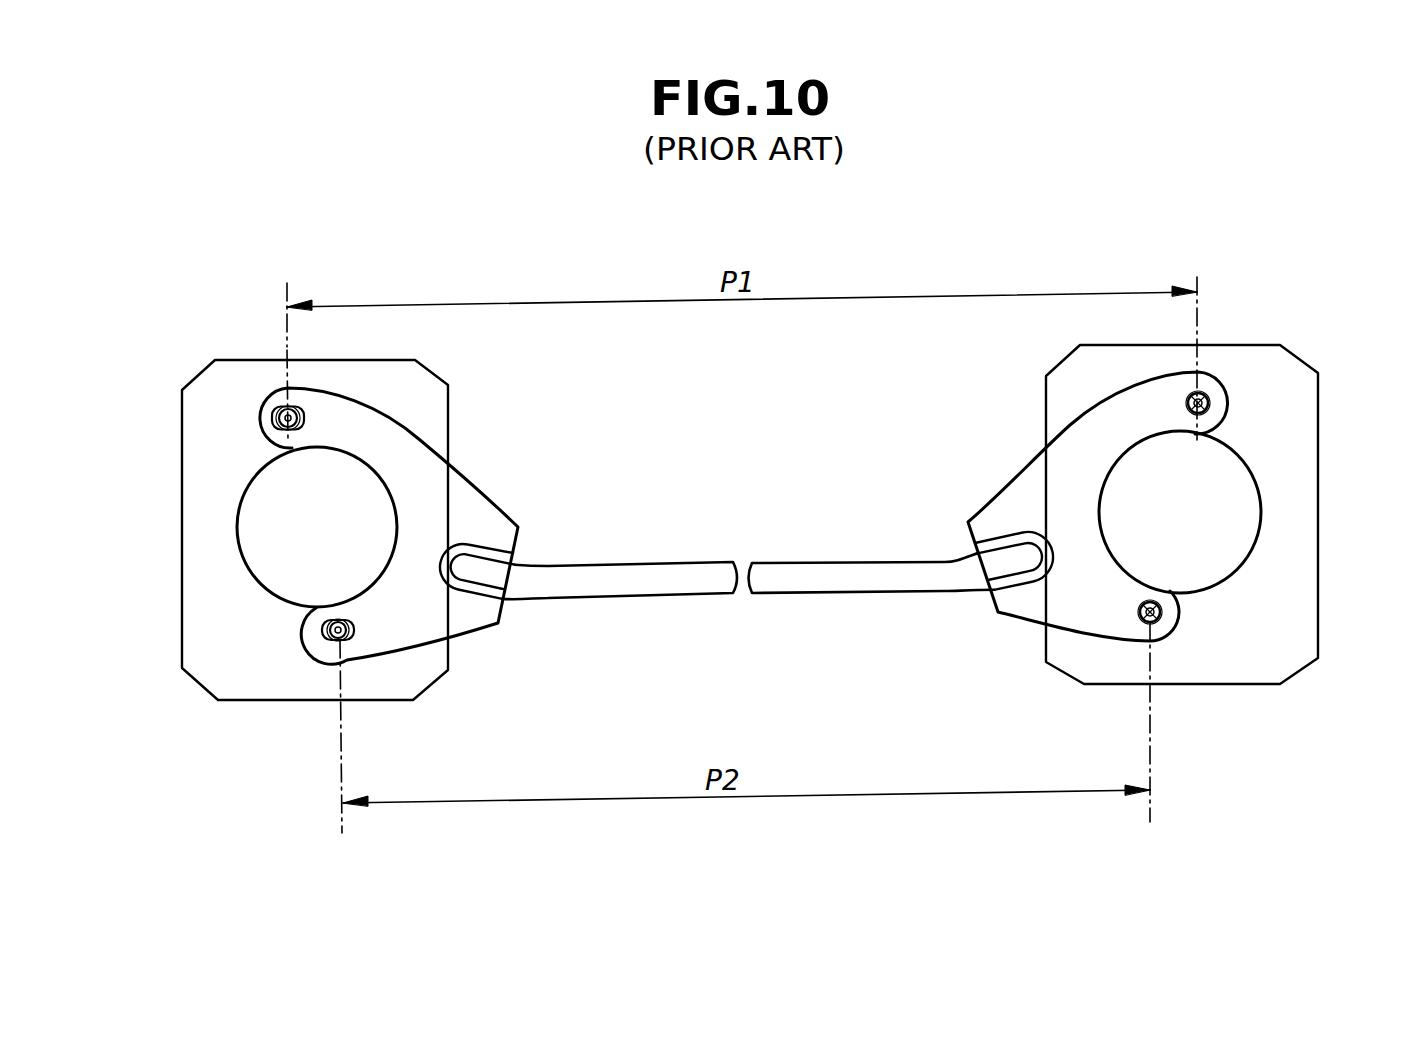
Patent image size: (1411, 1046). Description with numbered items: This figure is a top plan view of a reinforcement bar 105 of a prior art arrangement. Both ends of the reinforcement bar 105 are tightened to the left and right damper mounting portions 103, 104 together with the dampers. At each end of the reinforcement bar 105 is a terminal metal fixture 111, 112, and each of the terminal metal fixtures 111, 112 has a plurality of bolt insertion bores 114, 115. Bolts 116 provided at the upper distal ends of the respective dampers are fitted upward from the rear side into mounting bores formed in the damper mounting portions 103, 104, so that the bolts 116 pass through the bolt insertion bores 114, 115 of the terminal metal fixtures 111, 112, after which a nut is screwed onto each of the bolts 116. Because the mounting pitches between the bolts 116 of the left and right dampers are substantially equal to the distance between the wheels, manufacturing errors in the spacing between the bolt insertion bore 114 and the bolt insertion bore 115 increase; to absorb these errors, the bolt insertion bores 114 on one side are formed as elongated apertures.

The damper mounting portion 103 is at (195, 377).
The damper mounting portion 104 is at (1298, 357).
The reinforcement bar 105 is at (667, 467).
The terminal metal fixture 111 is at (472, 488).
The terminal metal fixture 112 is at (1028, 463).
The bolt insertion bore 114 is at (313, 417).
The bolt insertion bore 115 is at (1185, 400).
The bolt 116 is at (257, 422).